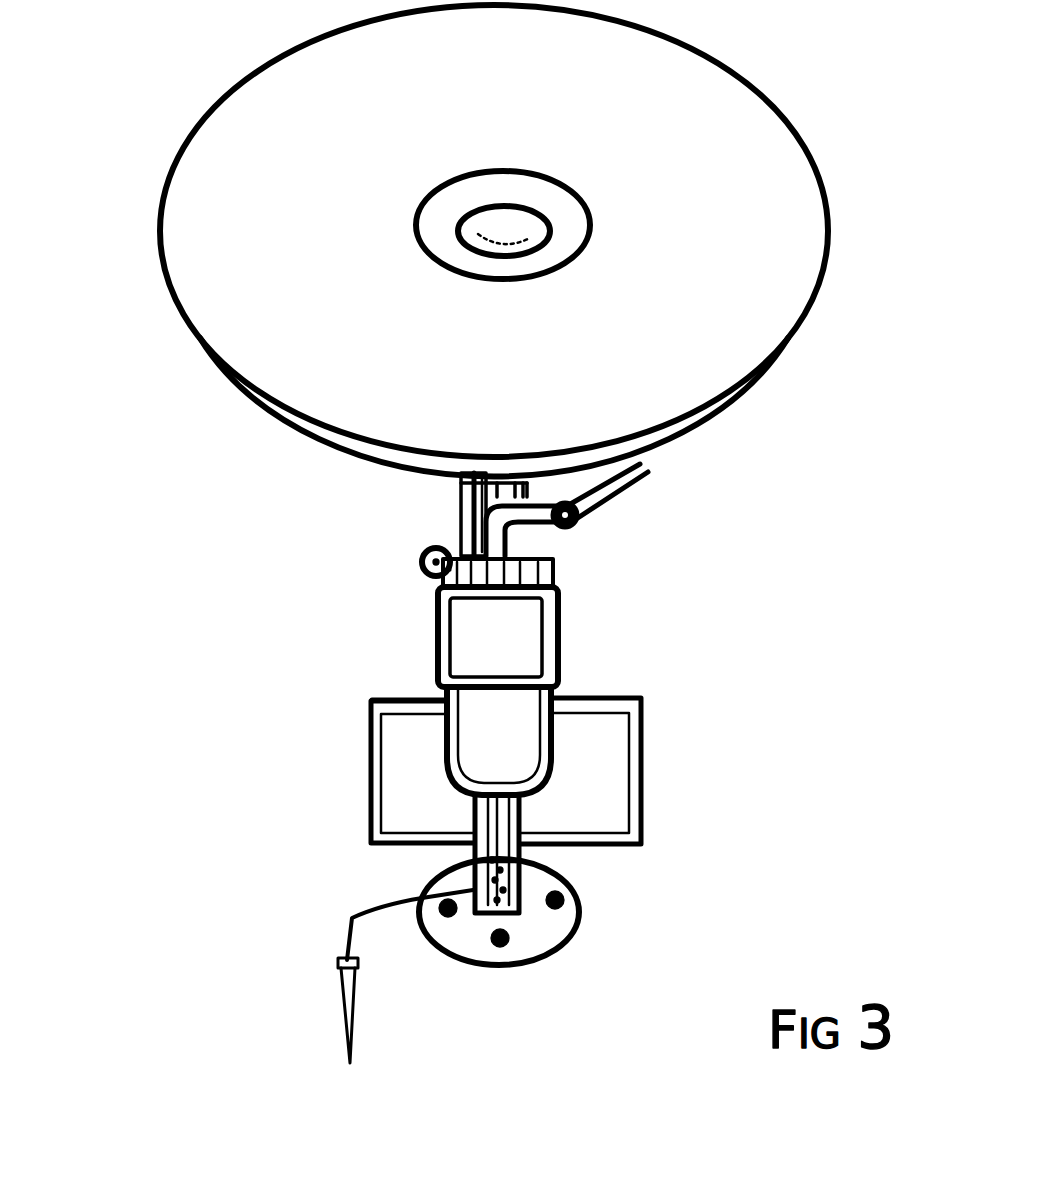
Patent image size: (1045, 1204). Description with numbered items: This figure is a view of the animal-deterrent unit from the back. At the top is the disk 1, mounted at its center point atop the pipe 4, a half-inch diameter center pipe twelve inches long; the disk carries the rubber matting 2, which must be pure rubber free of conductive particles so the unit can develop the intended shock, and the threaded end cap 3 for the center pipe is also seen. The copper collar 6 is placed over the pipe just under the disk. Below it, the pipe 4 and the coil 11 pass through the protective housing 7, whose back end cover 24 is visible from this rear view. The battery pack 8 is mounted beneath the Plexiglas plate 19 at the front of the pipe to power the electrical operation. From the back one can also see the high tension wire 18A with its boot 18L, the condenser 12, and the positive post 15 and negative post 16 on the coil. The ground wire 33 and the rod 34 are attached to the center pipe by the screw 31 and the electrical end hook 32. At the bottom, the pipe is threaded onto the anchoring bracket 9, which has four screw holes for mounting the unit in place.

The disk 1 is at (623, 175).
The rubber matting 2 is at (540, 256).
The threaded end cap 3 is at (460, 222).
The copper collar 6 is at (470, 490).
The high tension wire 18A is at (627, 473).
The boot 18L is at (576, 512).
The condenser 12 is at (420, 556).
The negative post 16 is at (440, 578).
The positive post 15 is at (553, 576).
The protective housing 7 is at (545, 641).
The back end cover 24 is at (488, 637).
The coil 11 is at (475, 748).
The battery pack 8 is at (608, 753).
The Plexiglas plate 19 is at (372, 700).
The pipe 4 is at (521, 847).
The screw 31 is at (473, 865).
The electrical end hook 32 is at (530, 888).
The anchoring bracket 9 is at (533, 918).
The ground wire 33 is at (350, 918).
The rod 34 is at (340, 962).